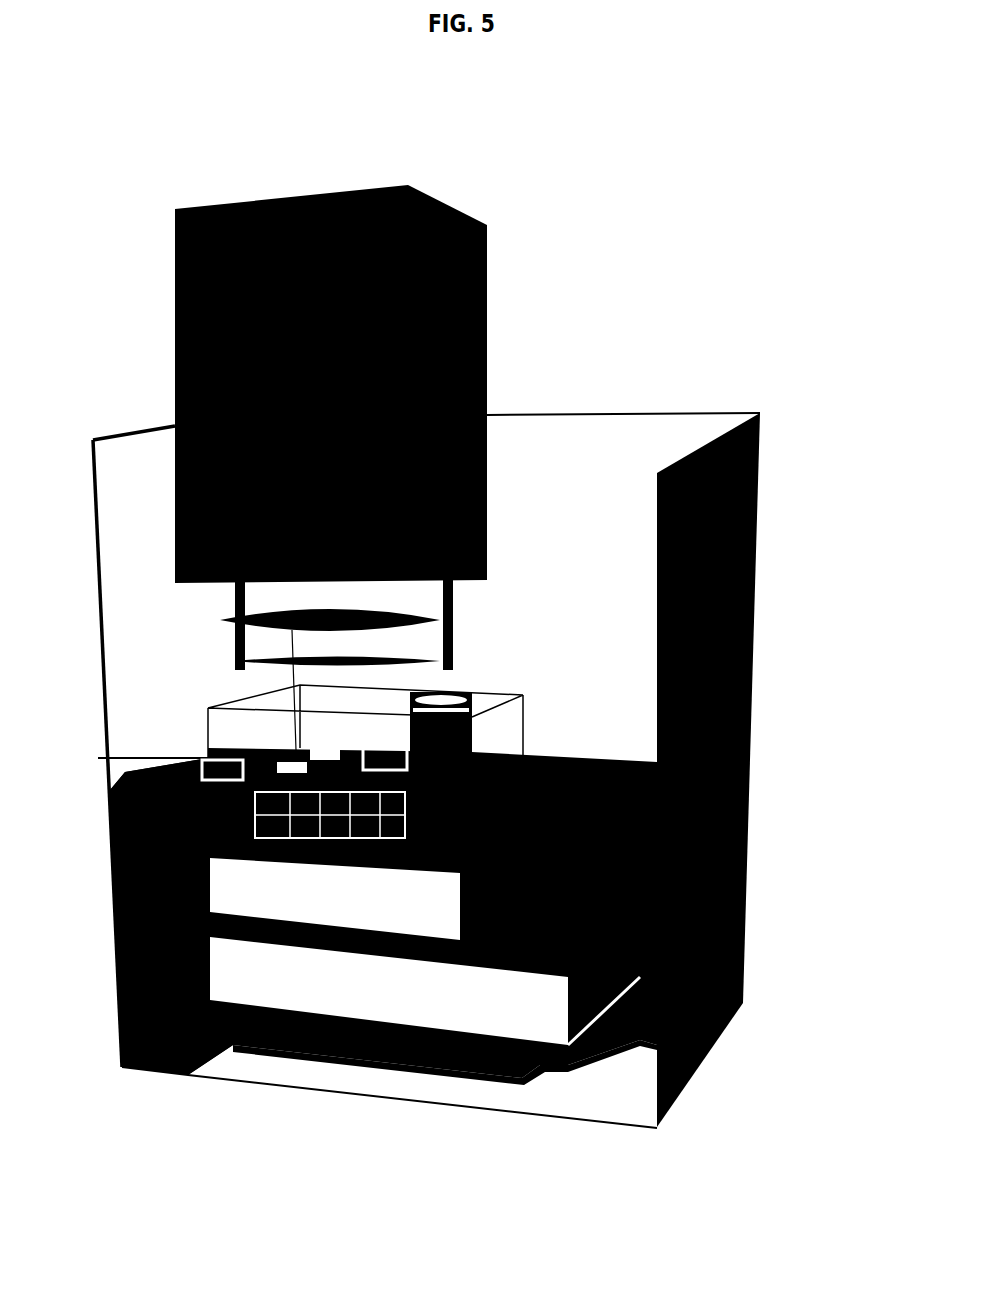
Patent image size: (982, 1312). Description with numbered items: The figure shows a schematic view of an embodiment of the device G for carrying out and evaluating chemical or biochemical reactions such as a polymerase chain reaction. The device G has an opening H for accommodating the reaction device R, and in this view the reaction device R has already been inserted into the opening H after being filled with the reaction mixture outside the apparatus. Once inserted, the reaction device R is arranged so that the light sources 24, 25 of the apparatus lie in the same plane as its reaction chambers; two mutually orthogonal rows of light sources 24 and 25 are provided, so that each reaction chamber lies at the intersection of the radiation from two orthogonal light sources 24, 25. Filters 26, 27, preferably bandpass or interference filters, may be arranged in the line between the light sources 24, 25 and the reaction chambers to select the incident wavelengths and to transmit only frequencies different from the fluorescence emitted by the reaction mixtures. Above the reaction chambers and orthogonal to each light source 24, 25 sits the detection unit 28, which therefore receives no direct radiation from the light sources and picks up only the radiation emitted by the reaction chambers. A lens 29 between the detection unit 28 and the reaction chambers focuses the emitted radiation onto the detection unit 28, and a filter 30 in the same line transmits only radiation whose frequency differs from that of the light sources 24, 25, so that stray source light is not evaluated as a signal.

The light source 24 is at (125, 785).
The light source 25 is at (368, 742).
The filter 26 is at (113, 861).
The filter 27 is at (245, 750).
The detection unit 28 is at (487, 288).
The lens 29 is at (420, 610).
The filter 30 is at (420, 656).
The reaction device R is at (333, 982).
The opening H is at (543, 1088).
The device G is at (717, 1043).